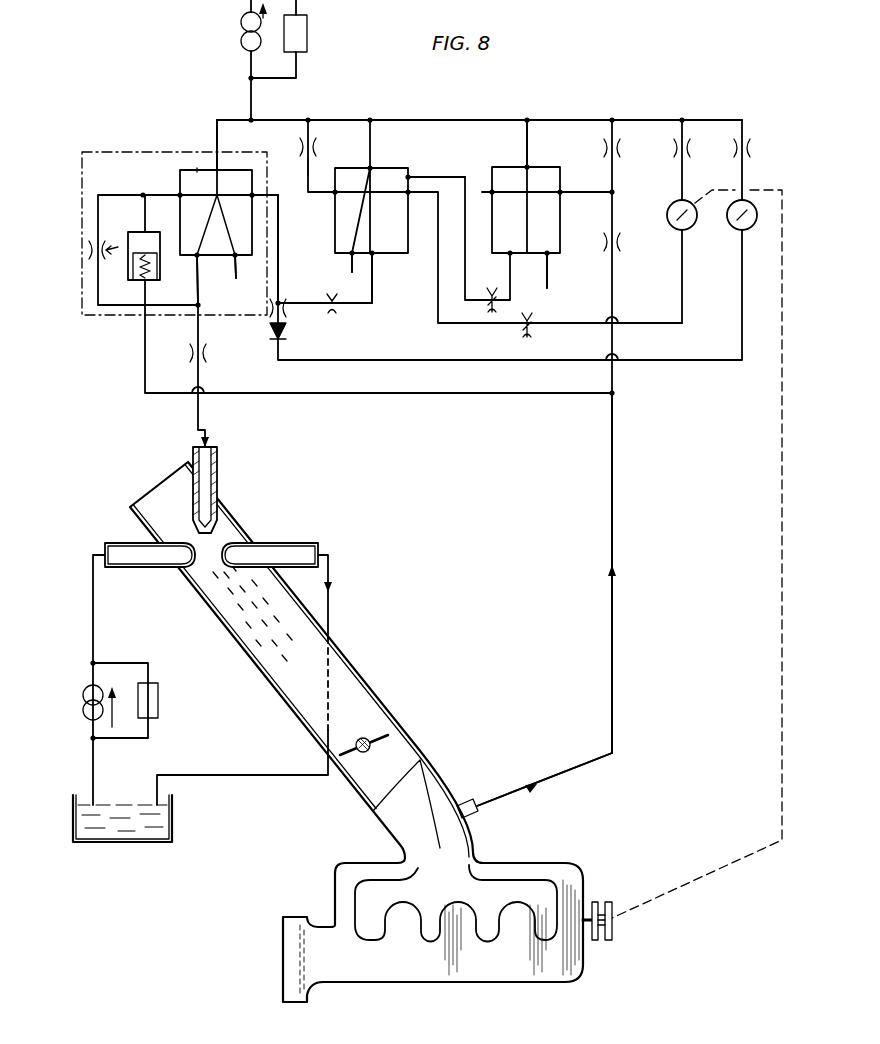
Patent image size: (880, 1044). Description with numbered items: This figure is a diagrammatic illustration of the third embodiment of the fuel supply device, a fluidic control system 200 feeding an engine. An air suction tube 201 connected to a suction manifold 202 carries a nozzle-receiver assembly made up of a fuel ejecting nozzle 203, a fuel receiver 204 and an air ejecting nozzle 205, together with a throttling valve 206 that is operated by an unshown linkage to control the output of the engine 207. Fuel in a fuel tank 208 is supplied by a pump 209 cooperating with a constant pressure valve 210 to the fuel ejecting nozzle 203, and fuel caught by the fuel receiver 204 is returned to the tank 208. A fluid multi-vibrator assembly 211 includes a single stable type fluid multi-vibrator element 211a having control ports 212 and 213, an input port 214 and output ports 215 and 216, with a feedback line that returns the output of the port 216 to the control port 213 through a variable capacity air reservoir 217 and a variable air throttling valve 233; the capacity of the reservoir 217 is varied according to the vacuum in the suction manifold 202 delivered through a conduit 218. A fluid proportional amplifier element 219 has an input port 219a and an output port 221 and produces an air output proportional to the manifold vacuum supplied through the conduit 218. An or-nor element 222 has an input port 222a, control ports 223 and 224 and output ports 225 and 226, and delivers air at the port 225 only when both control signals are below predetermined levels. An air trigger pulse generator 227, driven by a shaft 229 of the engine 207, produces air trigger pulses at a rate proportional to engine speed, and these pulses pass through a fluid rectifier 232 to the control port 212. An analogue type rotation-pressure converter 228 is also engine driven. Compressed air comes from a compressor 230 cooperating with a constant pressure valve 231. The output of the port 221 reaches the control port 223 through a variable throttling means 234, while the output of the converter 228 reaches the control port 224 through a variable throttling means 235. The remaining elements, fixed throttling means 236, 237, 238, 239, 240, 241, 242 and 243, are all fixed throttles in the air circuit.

The electronic control unit 200 is at (560, 190).
The air suction tube 201 is at (160, 492).
The suction manifold 202 is at (517, 885).
The fuel ejecting nozzle 203 is at (127, 558).
The fuel receiver 204 is at (295, 555).
The air ejecting nozzle 205 is at (219, 466).
The throttling valve 206 is at (378, 736).
The engine 207 is at (555, 882).
The fuel tank 208 is at (115, 830).
The pump 209 is at (88, 688).
The constant pressure valve 210 is at (160, 705).
The fluid multi-vibrator assembly 211 is at (133, 152).
The single stable type fluid multi-vibrator element 211a is at (197, 168).
The control port 212 is at (255, 188).
The control port 213 is at (180, 195).
The input port 214 is at (217, 170).
The output port 215 is at (237, 262).
The output port 216 is at (201, 262).
The variable capacity air reservoir 217 is at (137, 232).
The conduit 218 is at (612, 600).
The fluid proportional amplifier element 219 is at (543, 168).
The input port 219a is at (527, 166).
The output port 221 is at (512, 265).
The or-nor element 222 is at (390, 168).
The input port 222a is at (339, 159).
The control port 223 is at (409, 175).
The control port 224 is at (374, 255).
The output port 225 is at (374, 268).
The output port 226 is at (353, 274).
The air trigger pulse generator 227 is at (748, 200).
The analogue type rotation-pressure converter 228 is at (690, 232).
The shaft 229 is at (595, 902).
The compressor 230 is at (242, 18).
The constant pressure valve 231 is at (308, 24).
The fluid rectifier 232 is at (272, 338).
The variable air throttling valve 233 is at (93, 262).
The variable throttling means 234 is at (492, 314).
The variable throttling means 235 is at (540, 336).
The fixed throttling means 236 is at (196, 355).
The fixed throttling means 237 is at (306, 284).
The fixed throttling means 238 is at (318, 143).
The fixed throttling means 239 is at (332, 312).
The fixed throttling means 240 is at (620, 240).
The fixed throttling means 241 is at (620, 148).
The fixed throttling means 242 is at (690, 150).
The fixed throttling means 243 is at (772, 132).